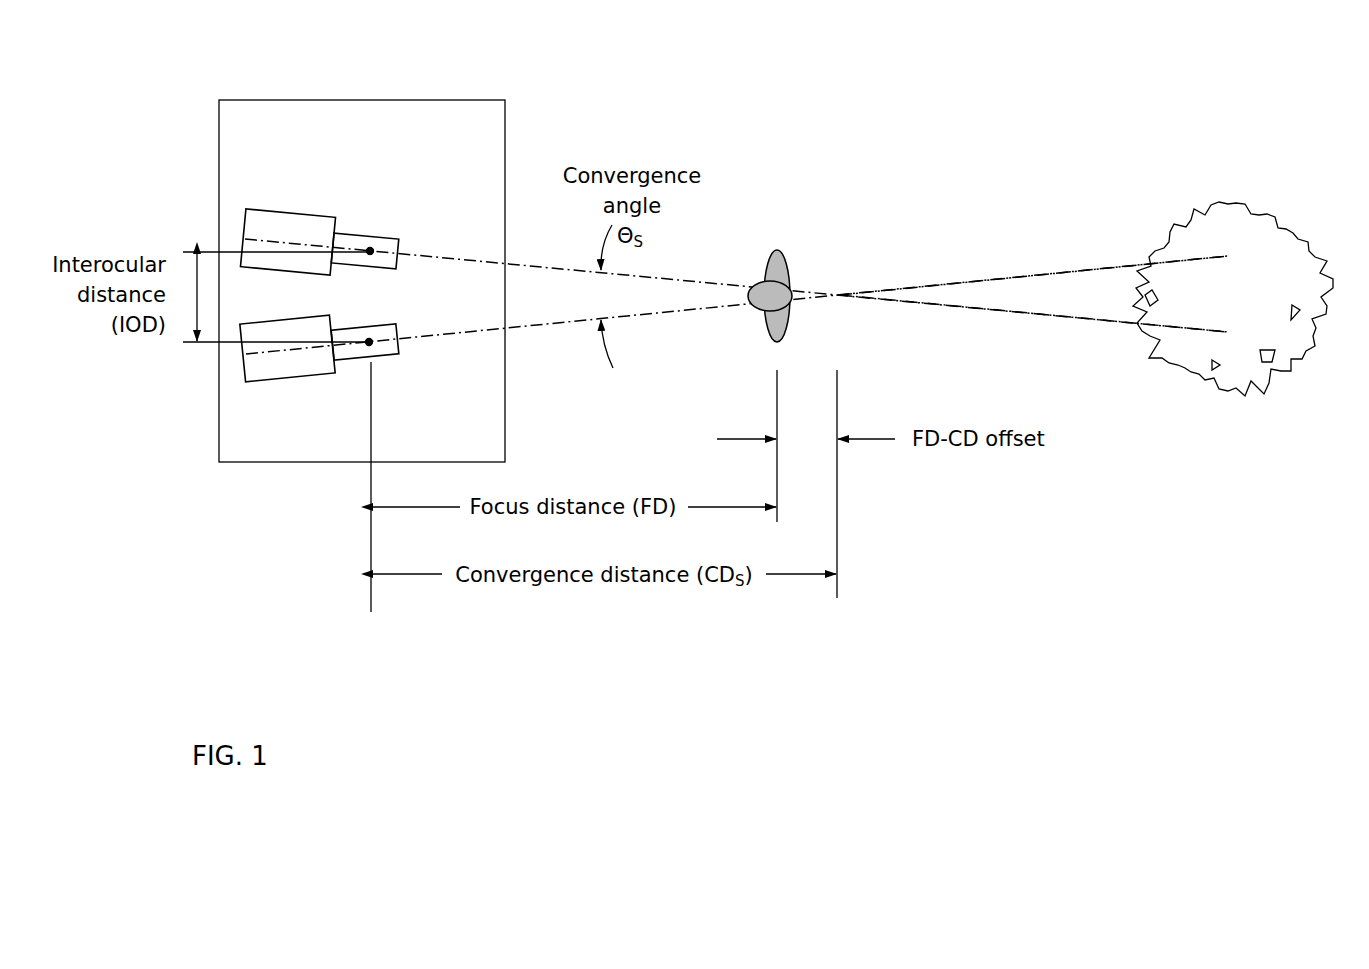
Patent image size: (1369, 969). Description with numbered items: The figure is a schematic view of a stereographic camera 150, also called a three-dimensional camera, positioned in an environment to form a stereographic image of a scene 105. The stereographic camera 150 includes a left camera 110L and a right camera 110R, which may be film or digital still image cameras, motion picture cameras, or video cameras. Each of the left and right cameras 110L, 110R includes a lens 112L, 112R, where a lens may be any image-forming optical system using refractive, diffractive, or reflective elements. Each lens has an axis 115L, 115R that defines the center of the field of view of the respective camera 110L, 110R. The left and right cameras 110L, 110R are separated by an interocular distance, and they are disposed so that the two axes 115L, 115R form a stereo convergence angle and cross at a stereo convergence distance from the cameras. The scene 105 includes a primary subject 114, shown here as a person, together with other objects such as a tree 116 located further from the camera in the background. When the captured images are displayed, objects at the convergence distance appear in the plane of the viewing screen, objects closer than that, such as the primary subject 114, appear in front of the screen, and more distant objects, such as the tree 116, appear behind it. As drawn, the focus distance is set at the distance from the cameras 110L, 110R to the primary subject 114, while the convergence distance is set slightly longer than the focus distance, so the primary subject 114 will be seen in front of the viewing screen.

The scene 105 is at (593, 66).
The stereographic camera 150 is at (362, 281).
The left camera 110L is at (287, 210).
The right camera 110R is at (305, 378).
The lens 112L is at (363, 233).
The lens 112R is at (379, 357).
The primary subject 114 is at (777, 250).
The axis 115R is at (968, 282).
The axis 115L is at (968, 308).
The tree 116 is at (1233, 210).